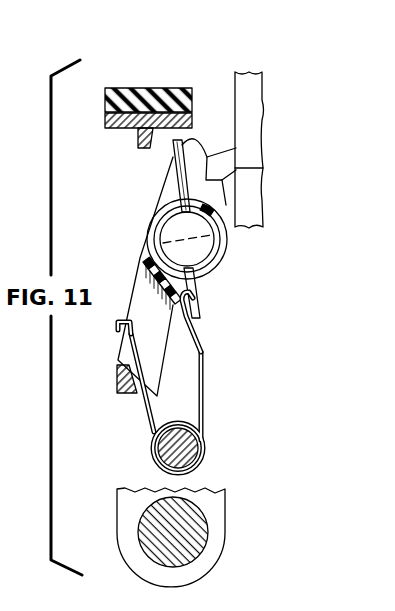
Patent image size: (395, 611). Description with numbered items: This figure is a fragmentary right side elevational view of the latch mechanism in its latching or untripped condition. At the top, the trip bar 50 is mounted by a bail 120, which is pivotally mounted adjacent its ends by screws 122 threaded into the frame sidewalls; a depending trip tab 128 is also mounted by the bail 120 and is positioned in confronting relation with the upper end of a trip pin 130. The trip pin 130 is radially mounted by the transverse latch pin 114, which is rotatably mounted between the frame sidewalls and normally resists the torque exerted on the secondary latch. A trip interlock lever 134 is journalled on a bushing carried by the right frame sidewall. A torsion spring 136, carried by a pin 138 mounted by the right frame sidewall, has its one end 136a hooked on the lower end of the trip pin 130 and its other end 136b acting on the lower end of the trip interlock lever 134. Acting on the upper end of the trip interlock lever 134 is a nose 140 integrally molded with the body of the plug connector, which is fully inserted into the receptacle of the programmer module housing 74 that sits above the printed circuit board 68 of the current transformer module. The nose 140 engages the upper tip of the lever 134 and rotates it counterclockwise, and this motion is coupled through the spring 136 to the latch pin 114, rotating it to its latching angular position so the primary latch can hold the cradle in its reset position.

The trip bar 50 is at (143, 88).
The bail 120 is at (105, 117).
The trip tab 128 is at (138, 148).
The trip pin 130 is at (172, 160).
The trip interlock lever 134 is at (150, 228).
The nose 140 is at (218, 147).
The programmer module housing 74 is at (248, 72).
The printed circuit board 68 is at (253, 218).
The latch pin 114 is at (208, 251).
The torsion spring 136 is at (155, 457).
The spring end 136a is at (194, 305).
The spring end 136b is at (125, 340).
The pin 138 is at (186, 452).
The screw 122 is at (200, 525).